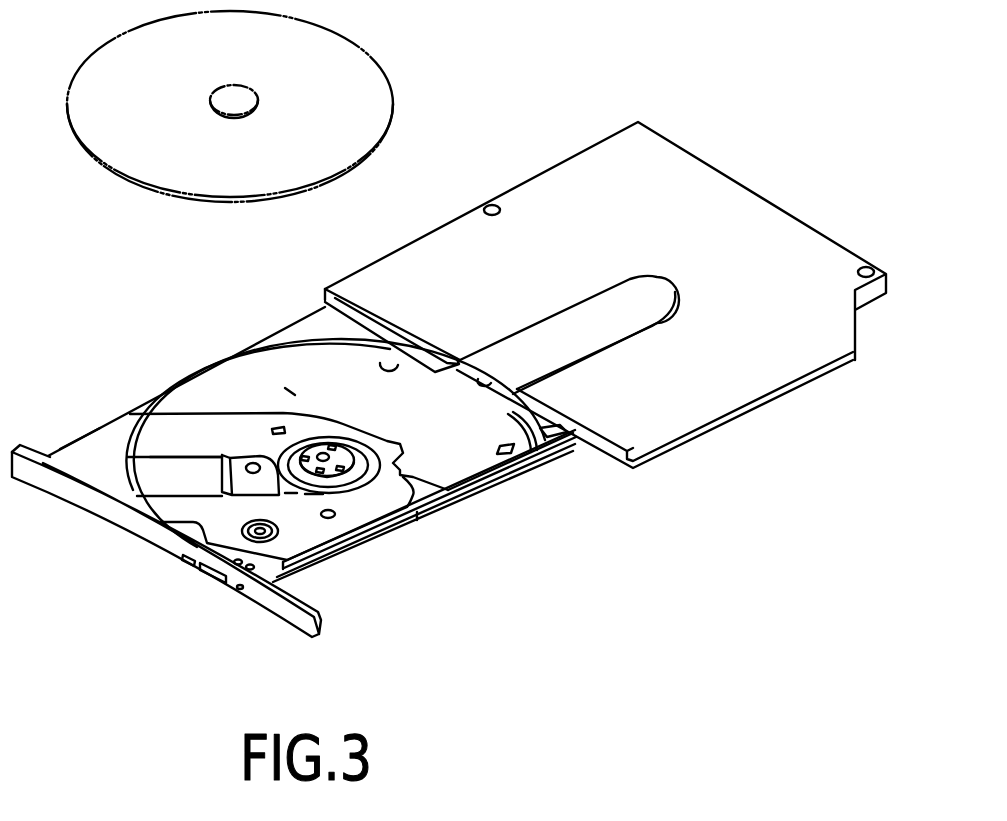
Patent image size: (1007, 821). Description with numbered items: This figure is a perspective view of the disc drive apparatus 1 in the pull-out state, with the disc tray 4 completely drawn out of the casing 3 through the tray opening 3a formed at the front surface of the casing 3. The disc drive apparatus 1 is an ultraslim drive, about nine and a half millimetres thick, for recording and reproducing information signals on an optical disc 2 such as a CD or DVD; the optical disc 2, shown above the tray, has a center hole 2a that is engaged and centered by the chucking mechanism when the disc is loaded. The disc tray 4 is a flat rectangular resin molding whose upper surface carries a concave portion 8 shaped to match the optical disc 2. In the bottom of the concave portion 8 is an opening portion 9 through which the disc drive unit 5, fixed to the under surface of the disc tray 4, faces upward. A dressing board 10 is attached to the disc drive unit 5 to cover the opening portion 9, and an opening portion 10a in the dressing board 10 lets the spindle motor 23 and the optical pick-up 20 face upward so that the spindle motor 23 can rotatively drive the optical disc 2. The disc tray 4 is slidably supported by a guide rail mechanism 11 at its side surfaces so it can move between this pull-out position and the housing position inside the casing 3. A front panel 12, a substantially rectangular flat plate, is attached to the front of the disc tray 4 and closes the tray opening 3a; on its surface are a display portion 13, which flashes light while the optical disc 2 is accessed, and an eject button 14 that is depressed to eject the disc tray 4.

The disc drive apparatus 1 is at (89, 337).
The optical disc 2 is at (373, 52).
The center hole 2a is at (252, 92).
The casing 3 is at (698, 197).
The tray opening 3a is at (490, 382).
The disc tray 4 is at (88, 442).
The disc drive unit 5 is at (294, 382).
The concave portion 8 is at (388, 368).
The opening portion 9 is at (453, 490).
The dressing board 10 is at (350, 503).
The opening portion 10a is at (180, 458).
The guide rail mechanism 11 is at (413, 513).
The front panel 12 is at (125, 522).
The display portion 13 is at (187, 567).
The eject button 14 is at (210, 577).
The optical pick-up 20 is at (230, 470).
The spindle motor 23 is at (312, 438).